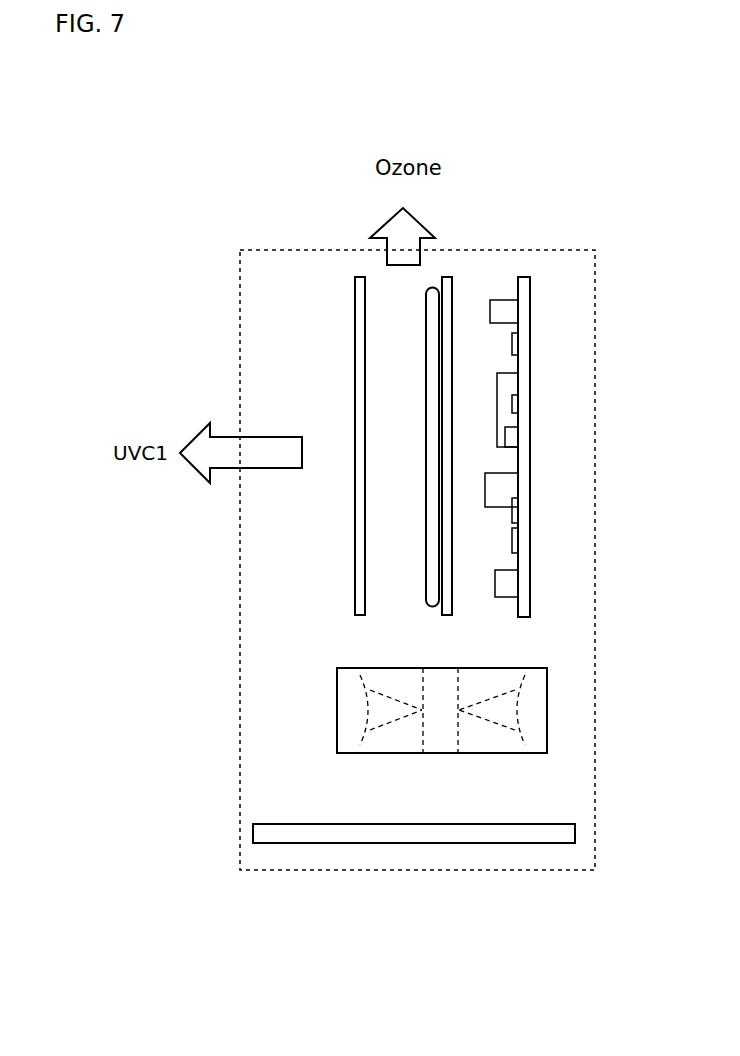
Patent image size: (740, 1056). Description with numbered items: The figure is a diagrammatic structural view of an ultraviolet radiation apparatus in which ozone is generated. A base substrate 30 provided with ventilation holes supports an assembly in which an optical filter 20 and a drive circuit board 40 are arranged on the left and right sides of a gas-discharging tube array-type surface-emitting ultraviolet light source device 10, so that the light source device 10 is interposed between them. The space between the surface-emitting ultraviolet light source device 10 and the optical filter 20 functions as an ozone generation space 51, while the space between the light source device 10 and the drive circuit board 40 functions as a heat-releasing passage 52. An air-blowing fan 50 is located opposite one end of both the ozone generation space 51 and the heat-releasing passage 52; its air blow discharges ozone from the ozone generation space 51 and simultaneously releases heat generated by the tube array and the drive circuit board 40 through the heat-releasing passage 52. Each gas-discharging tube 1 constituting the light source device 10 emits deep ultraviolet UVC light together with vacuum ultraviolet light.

The gas-discharging tube 1 is at (425, 298).
The gas-discharging tube array-type surface-emitting ultraviolet light source device 10 is at (445, 277).
The optical filter 20 is at (355, 342).
The base substrate 30 is at (350, 835).
The drive circuit board 40 is at (530, 445).
The air-blowing fan 50 is at (337, 707).
The ozone generation space 51 is at (385, 492).
The heat-releasing passage 52 is at (473, 377).